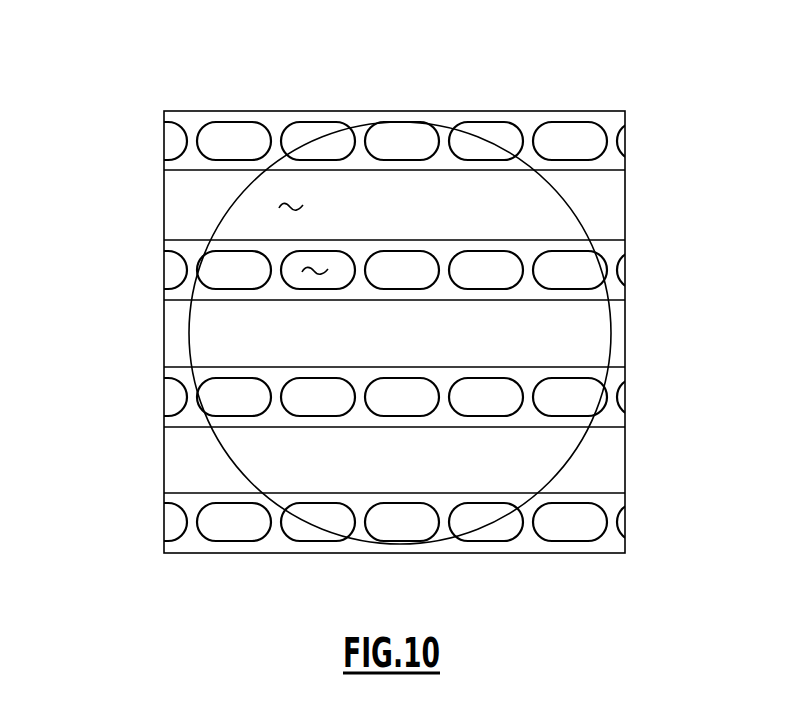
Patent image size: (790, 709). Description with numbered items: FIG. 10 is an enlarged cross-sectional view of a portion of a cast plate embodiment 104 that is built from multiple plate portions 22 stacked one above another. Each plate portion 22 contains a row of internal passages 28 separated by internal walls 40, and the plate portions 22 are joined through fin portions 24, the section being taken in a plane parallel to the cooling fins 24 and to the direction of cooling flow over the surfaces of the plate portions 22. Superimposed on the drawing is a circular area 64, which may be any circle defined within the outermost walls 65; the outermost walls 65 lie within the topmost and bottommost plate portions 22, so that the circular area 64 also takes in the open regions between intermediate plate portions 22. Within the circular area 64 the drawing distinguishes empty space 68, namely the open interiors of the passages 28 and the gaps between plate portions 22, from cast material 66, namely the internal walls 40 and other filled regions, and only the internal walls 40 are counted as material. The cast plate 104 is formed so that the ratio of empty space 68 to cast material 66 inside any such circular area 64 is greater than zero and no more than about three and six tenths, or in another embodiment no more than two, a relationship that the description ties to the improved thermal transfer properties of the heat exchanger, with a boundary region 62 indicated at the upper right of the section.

The perforated sheet 104 is at (152, 194).
The plate portion 22 is at (180, 117).
The fin portion 24 is at (297, 205).
The internal passage 28 is at (315, 276).
The internal wall 40 is at (446, 258).
The circular region 62 is at (488, 212).
The circular area 64 is at (349, 556).
The outermost wall 65 is at (463, 107).
The cast material 66 is at (524, 288).
The empty space 68 is at (402, 272).